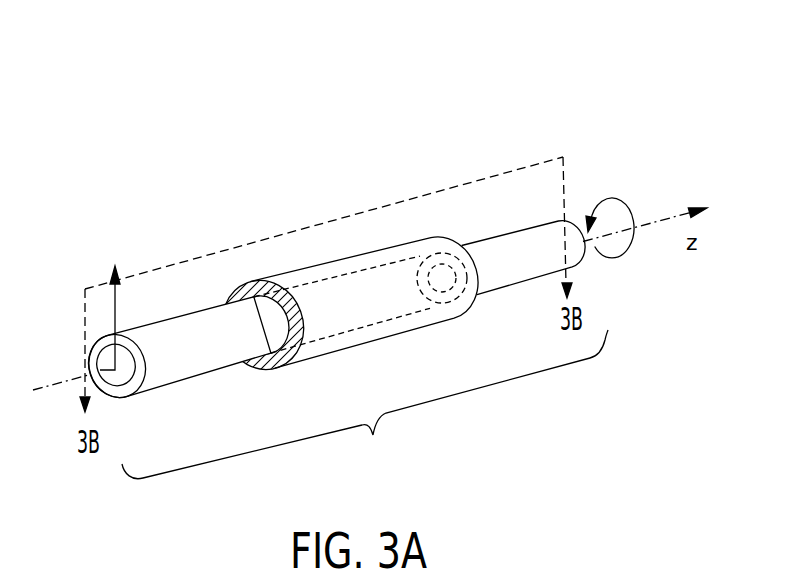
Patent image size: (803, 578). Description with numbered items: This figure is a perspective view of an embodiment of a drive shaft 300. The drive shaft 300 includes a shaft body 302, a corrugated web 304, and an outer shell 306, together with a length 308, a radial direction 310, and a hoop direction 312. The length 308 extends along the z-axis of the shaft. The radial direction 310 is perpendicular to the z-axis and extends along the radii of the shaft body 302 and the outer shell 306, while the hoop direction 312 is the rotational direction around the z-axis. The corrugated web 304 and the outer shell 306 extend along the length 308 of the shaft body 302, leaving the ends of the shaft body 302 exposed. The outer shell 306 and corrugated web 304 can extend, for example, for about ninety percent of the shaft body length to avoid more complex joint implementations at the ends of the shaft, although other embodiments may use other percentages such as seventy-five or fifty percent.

The drive shaft 300 is at (488, 94).
The shaft body 302 is at (161, 387).
The corrugated web 304 is at (262, 291).
The outer shell 306 is at (385, 250).
The length 308 is at (365, 404).
The radial direction 310 is at (115, 331).
The hoop direction 312 is at (630, 208).